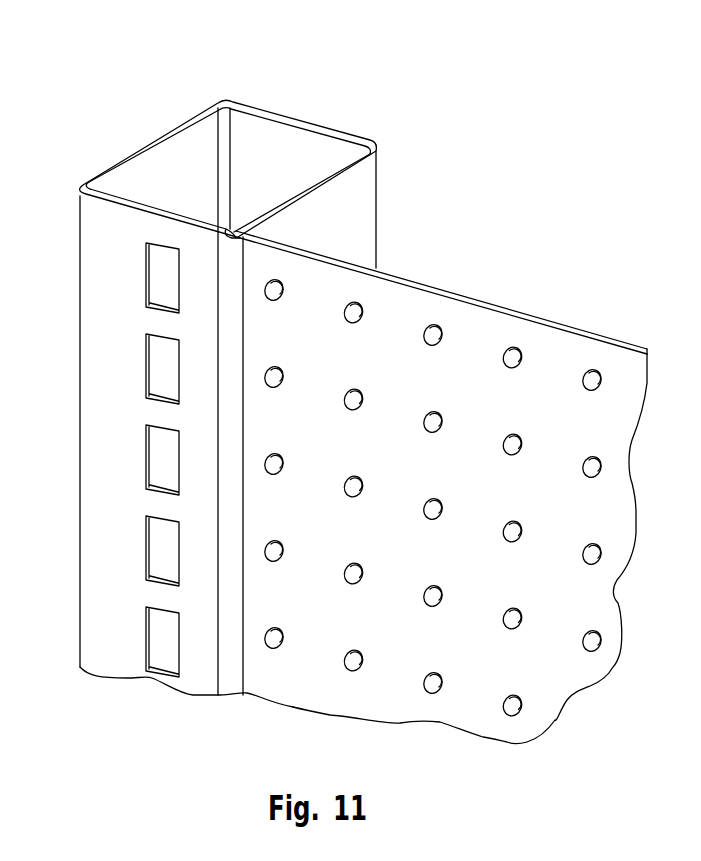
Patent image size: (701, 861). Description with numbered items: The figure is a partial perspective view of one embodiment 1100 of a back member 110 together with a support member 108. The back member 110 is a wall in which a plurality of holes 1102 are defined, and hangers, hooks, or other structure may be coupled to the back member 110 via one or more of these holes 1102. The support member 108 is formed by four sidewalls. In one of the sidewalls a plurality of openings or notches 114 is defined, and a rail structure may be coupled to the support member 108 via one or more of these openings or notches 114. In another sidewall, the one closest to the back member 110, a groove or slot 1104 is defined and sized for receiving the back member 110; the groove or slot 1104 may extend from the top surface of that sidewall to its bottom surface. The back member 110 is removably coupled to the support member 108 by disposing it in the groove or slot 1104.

The embodiment of a back member 1100 is at (342, 387).
The support member 108 is at (145, 150).
The back member 110 is at (450, 312).
The holes 1102 is at (522, 352).
The groove or slot 1104 is at (242, 229).
The openings or notches 114 is at (157, 458).